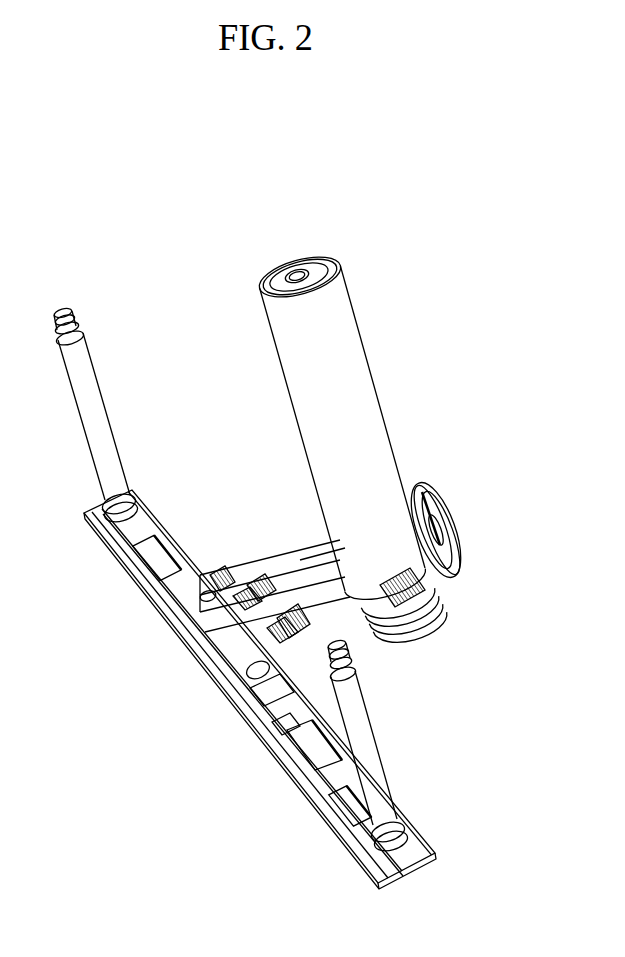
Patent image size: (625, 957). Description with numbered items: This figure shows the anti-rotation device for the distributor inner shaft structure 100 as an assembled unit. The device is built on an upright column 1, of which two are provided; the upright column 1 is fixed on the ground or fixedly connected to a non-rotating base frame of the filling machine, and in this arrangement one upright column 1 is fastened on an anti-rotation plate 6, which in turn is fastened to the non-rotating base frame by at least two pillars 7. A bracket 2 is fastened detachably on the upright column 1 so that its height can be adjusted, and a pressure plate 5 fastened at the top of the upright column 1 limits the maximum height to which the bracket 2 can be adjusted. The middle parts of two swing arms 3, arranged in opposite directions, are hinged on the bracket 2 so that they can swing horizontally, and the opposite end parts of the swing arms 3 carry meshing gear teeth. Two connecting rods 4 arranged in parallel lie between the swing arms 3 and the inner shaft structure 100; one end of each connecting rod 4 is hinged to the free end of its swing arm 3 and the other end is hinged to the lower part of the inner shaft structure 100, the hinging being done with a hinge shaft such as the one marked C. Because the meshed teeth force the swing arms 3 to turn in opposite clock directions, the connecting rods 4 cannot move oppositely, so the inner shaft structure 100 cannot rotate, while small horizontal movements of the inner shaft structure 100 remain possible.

The upright column 1 is at (213, 643).
The bracket 2 is at (250, 582).
The swing arms 3 is at (287, 577).
The connecting rods 4 is at (283, 572).
The pressure plate 5 is at (205, 593).
The anti-rotation plate 6 is at (280, 727).
The pillars 7 is at (98, 398).
The inner shaft structure 100 is at (370, 410).
The connecting pin C is at (218, 570).